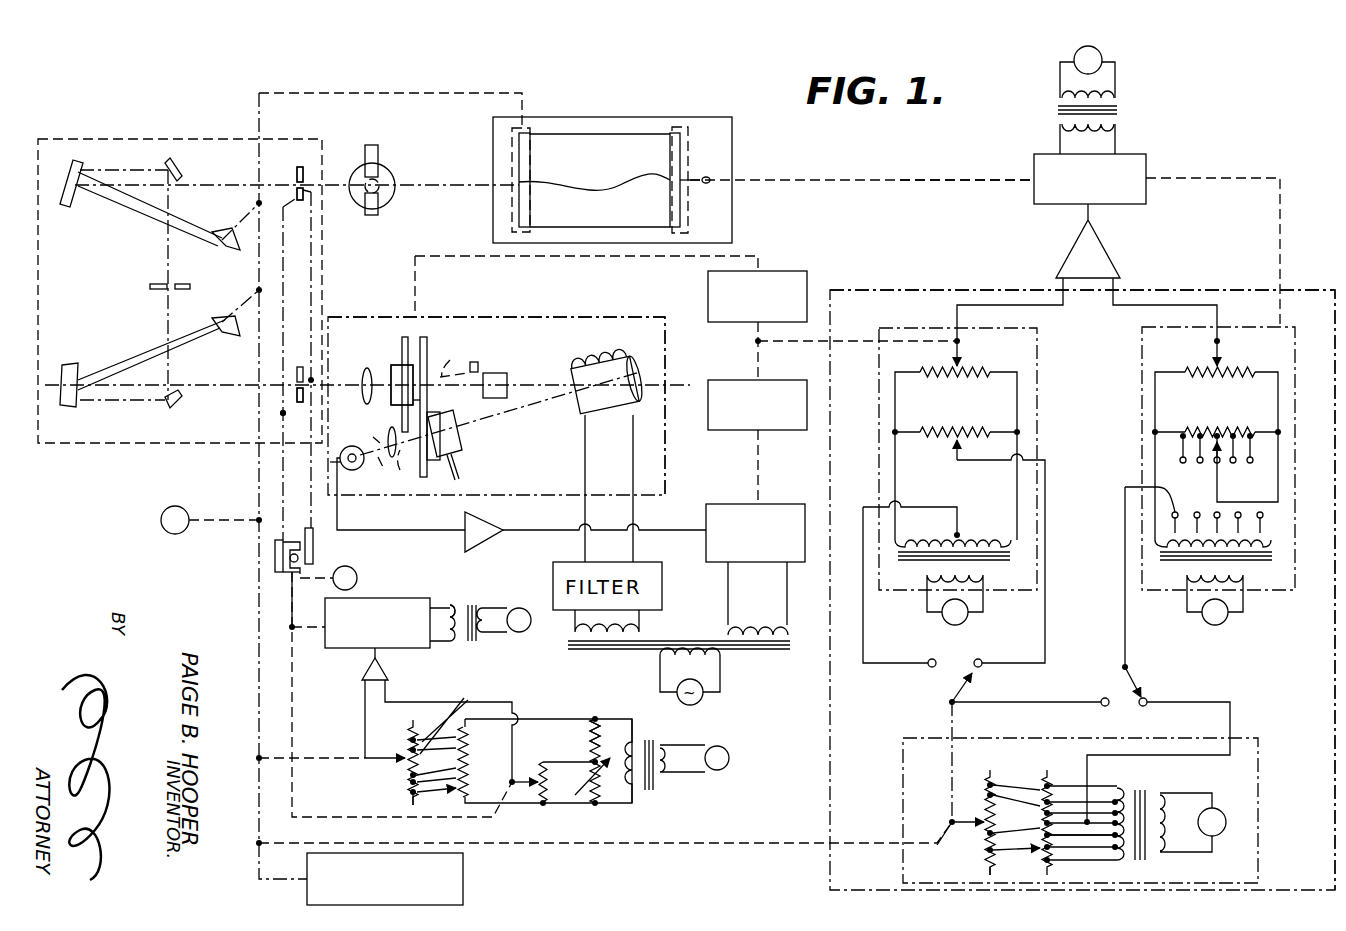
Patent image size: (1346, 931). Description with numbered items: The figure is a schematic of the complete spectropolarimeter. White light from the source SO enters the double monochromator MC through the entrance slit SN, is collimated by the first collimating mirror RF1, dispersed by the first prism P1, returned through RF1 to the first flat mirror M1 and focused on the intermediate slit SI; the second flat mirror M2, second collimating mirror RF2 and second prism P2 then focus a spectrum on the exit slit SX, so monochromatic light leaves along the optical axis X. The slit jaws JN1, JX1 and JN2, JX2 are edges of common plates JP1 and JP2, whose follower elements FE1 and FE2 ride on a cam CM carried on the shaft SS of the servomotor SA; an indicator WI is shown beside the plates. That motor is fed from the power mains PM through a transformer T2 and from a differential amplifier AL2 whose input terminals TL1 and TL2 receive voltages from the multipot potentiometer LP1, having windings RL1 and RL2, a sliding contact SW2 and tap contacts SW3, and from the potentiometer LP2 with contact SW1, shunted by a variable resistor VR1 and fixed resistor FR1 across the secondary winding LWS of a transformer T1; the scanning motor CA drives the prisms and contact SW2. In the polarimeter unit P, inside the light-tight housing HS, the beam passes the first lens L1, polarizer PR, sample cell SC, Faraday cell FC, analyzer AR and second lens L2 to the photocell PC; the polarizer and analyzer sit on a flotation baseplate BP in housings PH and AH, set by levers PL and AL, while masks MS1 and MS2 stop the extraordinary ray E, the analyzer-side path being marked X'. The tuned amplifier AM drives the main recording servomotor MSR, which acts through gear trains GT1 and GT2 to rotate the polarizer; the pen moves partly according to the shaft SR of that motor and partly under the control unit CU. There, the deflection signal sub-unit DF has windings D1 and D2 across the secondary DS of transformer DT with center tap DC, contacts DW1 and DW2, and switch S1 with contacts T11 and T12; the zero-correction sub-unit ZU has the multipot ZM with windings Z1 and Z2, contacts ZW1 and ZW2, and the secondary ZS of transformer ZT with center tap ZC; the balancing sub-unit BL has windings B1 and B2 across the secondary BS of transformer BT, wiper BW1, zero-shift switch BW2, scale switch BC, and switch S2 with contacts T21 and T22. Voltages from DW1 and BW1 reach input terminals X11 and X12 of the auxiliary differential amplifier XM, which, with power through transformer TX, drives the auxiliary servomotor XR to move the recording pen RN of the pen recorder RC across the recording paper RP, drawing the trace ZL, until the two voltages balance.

The monochromator MC is at (88, 139).
The first collimating mirror RF1 is at (63, 207).
The first flat mirror M1 is at (176, 165).
The first dispersing prism P1 is at (225, 246).
The intermediate slit SI is at (158, 290).
The second dispersing prism P2 is at (235, 336).
The second collimating mirror RF2 is at (65, 365).
The second flat mirror M2 is at (168, 410).
The optical axis X is at (364, 389).
The entrance slit SN is at (297, 180).
The entrance slit jaw JN1 is at (303, 170).
The entrance slit jaw JN2 is at (303, 195).
The exit slit jaw JX1 is at (297, 375).
The exit slit SX is at (297, 392).
The exit slit jaw JX2 is at (303, 398).
The light source SO is at (384, 178).
The pen recorder RC is at (732, 162).
The recording paper RP is at (598, 134).
The zero line trace ZL is at (570, 185).
The recording pen RN is at (670, 183).
The shaft of main recording servomotor SR is at (925, 180).
The auxiliary servomotor XR is at (1146, 162).
The transformer TX is at (1125, 110).
The auxiliary differential amplifier XM is at (1106, 255).
The input terminal X11 is at (1063, 285).
The input terminal X12 is at (1113, 288).
The control unit CU is at (1305, 290).
The second gear train GT2 is at (780, 271).
The first gear train GT1 is at (727, 430).
The main recording servomotor MSR is at (800, 492).
The light-tight housing HS is at (560, 317).
The polarimeter unit P is at (388, 352).
The polarizer PR is at (398, 375).
The polarizer lever PL is at (405, 337).
The flotation baseplate BP is at (425, 337).
The first lens L1 is at (365, 355).
The extraordinary ray E is at (432, 408).
The black mask MS1 is at (475, 362).
The sample cell SC is at (495, 373).
The modulator Faraday cell FC is at (628, 362).
The polarizer housing PH is at (417, 400).
The second lens L2 is at (390, 432).
The analyzer housing AH is at (433, 460).
The analyzer AR is at (455, 436).
The analyzer lever AL is at (458, 478).
The photocell PC is at (352, 470).
The apertured mask MS2 is at (380, 467).
The secondary axis X' is at (325, 469).
The tuned amplifier AM is at (478, 548).
The common jaw plate JP1 is at (313, 545).
The common jaw plate JP2 is at (278, 568).
The follower element FE2 is at (290, 544).
The follower element FE1 is at (300, 568).
The width indicator WI is at (328, 578).
The cam CM is at (288, 580).
The slit servomotor SA is at (388, 598).
The transformer T2 is at (478, 600).
The power mains PM is at (450, 635).
The output shaft SS is at (340, 662).
The differential amplifier AL2 is at (370, 665).
The first input terminal TL1 is at (365, 685).
The second input terminal TL2 is at (385, 695).
The sliding contact SW2 is at (370, 760).
The second potentiometer winding RL2 is at (413, 740).
The potentiometer winding RL1 is at (470, 745).
The tap contacts SW3 is at (463, 715).
The slit width control potentiometer LP1 is at (408, 780).
The potentiometer contact SW1 is at (513, 782).
The second potentiometer LP2 is at (543, 803).
The variable resistor VR1 is at (600, 800).
The fixed resistor FR1 is at (596, 719).
The secondary winding LWS is at (628, 785).
The transformer T1 is at (650, 790).
The scanning motor CA is at (463, 880).
The deflection signal sub-unit DF is at (912, 328).
The potentiometer winding D1 is at (978, 372).
The potentiometer contact DW1 is at (957, 350).
The potentiometer winding D2 is at (955, 432).
The potentiometer contact DW2 is at (957, 457).
The secondary winding DS is at (970, 540).
The center tap DC is at (955, 533).
The transformer DT is at (1022, 557).
The switch contact T11 is at (930, 659).
The switch contact T12 is at (978, 659).
The switch S1 is at (950, 702).
The switch contact T21 is at (1101, 705).
The balancing sub-unit BL is at (1295, 348).
The potentiometer winding B1 is at (1208, 372).
The wiper contact BW1 is at (1217, 350).
The potentiometer winding B2 is at (1215, 430).
The zero-shift switch BW2 is at (1217, 472).
The scale switch BC is at (1173, 512).
The secondary winding BS is at (1268, 545).
The transformer BT is at (1278, 557).
The switch S2 is at (1135, 680).
The switch contact T22 is at (1146, 706).
The zero-correction sub-unit ZU is at (1250, 738).
The sliding contact ZW1 is at (949, 849).
The first potentiometer winding Z1 is at (990, 777).
The sliding contacts ZW2 is at (1016, 806).
The second potentiometer winding Z2 is at (1047, 777).
The secondary winding ZS is at (1125, 800).
The transformer ZT is at (1150, 853).
The multipot potentiometer ZM is at (990, 870).
The center tap ZC is at (1112, 835).